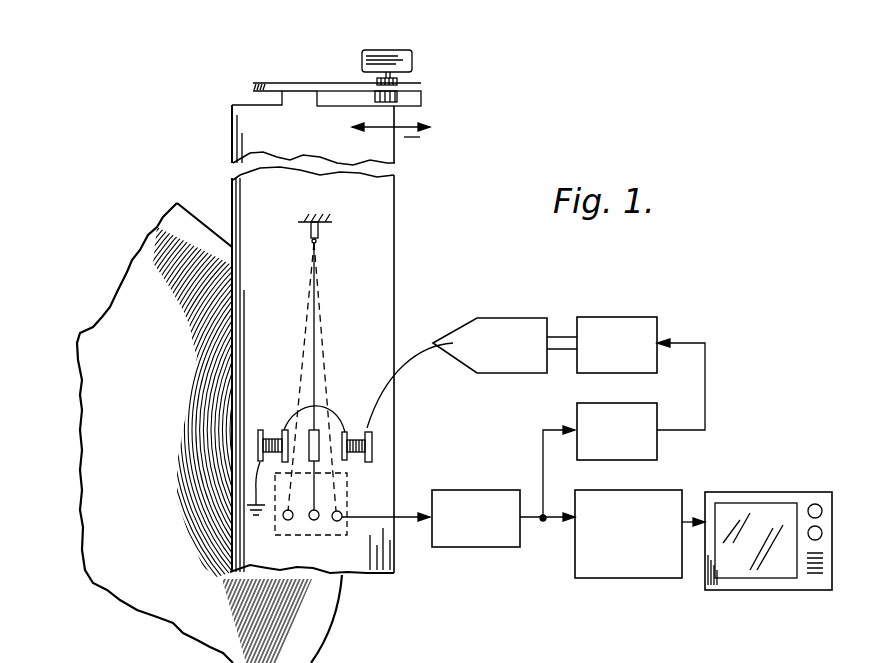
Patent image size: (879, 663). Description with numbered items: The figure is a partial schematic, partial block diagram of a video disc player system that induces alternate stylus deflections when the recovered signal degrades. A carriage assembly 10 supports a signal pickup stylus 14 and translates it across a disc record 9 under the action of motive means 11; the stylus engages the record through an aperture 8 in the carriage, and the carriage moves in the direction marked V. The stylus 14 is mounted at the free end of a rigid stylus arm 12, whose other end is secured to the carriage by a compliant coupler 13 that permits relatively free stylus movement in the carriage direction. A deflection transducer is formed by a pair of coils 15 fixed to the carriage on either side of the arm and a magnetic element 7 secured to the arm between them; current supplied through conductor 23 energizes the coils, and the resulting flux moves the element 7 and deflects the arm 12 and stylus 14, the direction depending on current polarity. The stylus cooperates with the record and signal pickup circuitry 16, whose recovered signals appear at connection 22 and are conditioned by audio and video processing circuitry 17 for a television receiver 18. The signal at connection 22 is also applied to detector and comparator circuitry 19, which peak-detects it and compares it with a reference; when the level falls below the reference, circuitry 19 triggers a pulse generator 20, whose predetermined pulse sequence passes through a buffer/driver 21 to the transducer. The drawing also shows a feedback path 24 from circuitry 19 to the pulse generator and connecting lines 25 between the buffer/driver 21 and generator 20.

The magnetic element 7 is at (309, 432).
The aperture 8 is at (278, 538).
The disc record 9 is at (178, 627).
The carriage assembly 10 is at (232, 197).
The motive means 11 is at (388, 50).
The rigid stylus arm 12 is at (309, 297).
The compliant coupler 13 is at (318, 231).
The signal pickup stylus 14 is at (314, 520).
The coils 15 is at (369, 462).
The signal pickup circuitry 16 is at (481, 548).
The audio and video processing circuitry 17 is at (628, 579).
The television receiver 18 is at (742, 594).
The detector and comparator circuitry 19 is at (660, 447).
The pulse generator 20 is at (622, 317).
The buffer/driver 21 is at (509, 318).
The connection 22 is at (544, 525).
The conductor 23 is at (423, 348).
The feedback line 24 is at (705, 392).
The buffer to pulse generator connection 25 is at (563, 352).